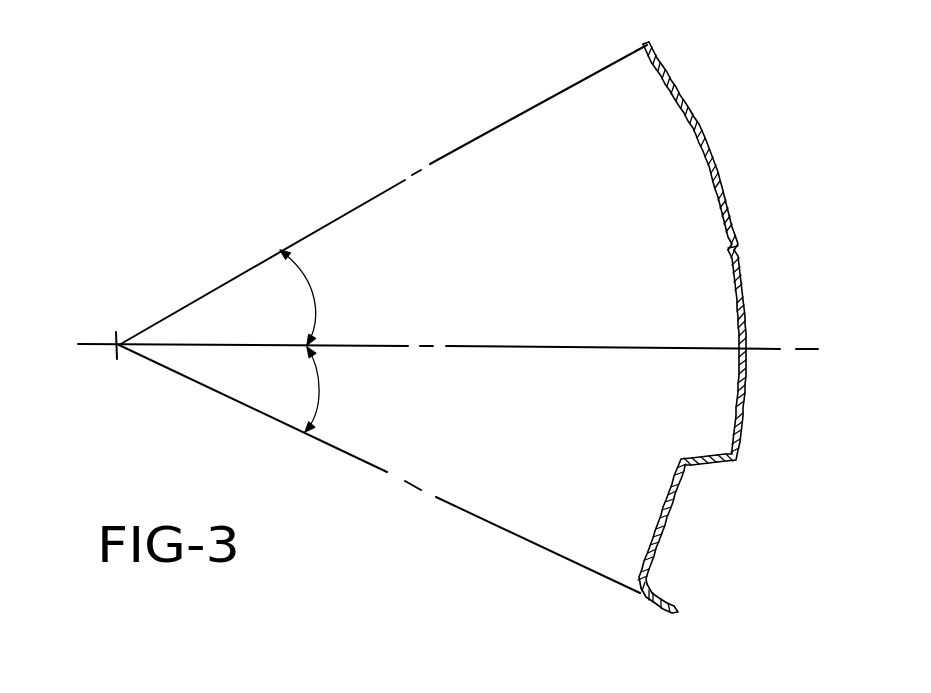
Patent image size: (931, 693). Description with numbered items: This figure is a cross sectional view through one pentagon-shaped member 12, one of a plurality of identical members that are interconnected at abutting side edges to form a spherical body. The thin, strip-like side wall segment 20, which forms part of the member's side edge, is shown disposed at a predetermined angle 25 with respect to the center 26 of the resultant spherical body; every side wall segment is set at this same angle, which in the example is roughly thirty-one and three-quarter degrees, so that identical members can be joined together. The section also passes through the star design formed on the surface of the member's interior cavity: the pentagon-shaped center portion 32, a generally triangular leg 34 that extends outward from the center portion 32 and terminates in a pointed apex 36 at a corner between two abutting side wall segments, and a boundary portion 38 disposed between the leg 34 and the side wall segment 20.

The member 12 is at (826, 192).
The side wall segment 20 is at (663, 593).
The predetermined angle 25 is at (316, 288).
The center 26 is at (118, 343).
The pentagon-shaped center portion 32 is at (747, 317).
The triangular leg 34 is at (722, 160).
The pointed apex 36 is at (643, 44).
The boundary portion 38 is at (677, 519).